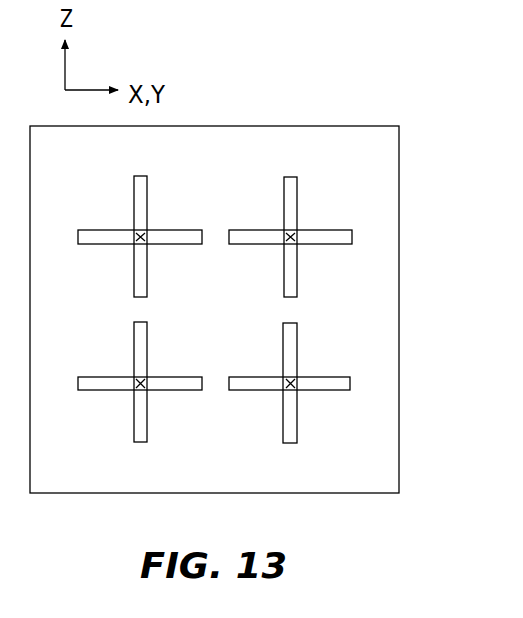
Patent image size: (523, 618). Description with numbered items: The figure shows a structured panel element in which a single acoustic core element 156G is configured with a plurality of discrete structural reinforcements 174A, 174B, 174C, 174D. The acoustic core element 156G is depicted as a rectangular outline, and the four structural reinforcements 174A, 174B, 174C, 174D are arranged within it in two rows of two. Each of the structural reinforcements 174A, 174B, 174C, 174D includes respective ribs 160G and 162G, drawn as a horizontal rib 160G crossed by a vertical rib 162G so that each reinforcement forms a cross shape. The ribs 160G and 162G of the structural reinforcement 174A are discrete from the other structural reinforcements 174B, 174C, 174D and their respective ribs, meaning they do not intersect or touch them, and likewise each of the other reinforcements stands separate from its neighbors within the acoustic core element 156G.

The acoustic core element 156G is at (318, 125).
The rib 160G is at (167, 244).
The rib 162G is at (283, 213).
The structural reinforcement 174A is at (120, 217).
The structural reinforcement 174B is at (325, 221).
The structural reinforcement 174C is at (120, 364).
The structural reinforcement 174D is at (325, 369).